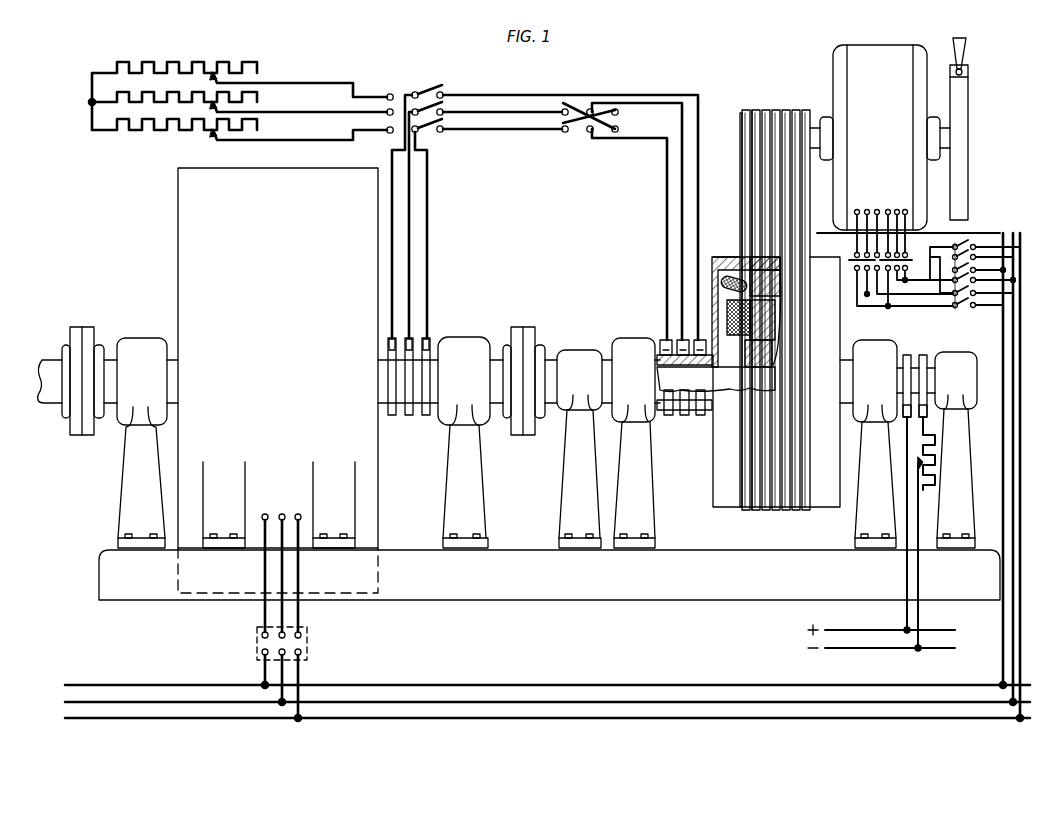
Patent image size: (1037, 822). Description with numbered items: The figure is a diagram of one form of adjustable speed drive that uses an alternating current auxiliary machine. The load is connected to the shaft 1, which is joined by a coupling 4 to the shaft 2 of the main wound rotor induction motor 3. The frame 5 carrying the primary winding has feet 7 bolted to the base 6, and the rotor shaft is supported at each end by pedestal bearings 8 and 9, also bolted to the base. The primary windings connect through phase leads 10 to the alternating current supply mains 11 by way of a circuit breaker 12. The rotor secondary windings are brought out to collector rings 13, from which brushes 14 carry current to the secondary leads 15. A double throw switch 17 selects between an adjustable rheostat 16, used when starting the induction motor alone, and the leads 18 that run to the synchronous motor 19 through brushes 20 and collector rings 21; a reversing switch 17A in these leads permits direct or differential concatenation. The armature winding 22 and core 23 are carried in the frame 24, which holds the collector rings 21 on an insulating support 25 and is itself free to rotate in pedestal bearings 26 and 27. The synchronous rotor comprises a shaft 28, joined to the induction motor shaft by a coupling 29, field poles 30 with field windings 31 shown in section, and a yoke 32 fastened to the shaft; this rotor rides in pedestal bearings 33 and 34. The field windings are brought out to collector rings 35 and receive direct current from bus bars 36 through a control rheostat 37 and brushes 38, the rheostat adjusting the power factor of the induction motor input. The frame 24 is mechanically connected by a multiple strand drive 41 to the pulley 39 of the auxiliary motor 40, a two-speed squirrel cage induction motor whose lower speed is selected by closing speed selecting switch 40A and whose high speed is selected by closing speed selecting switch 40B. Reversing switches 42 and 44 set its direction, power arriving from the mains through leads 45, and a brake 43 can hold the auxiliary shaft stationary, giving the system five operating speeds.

The shaft 1 is at (53, 368).
The shaft 2 is at (108, 368).
The main wound rotor induction motor 3 is at (130, 218).
The coupling 4 is at (76, 338).
The frame 5 is at (178, 264).
The base 6 is at (108, 566).
The feet 7 is at (340, 536).
The pedestal bearing 8 is at (124, 412).
The pedestal bearing 9 is at (472, 405).
The phase leads 10 is at (301, 613).
The alternating current supply mains 11 is at (712, 716).
The circuit breaker 12 is at (310, 642).
The collector rings 13 is at (426, 417).
The brushes 14 is at (428, 341).
The secondary leads 15 is at (404, 218).
The adjustable rheostat 16 is at (80, 112).
The double throw switch 17 is at (428, 132).
The reversing switch 17A is at (568, 133).
The leads 18 is at (698, 162).
The synchronous motor 19 is at (712, 266).
The brushes 20 is at (683, 345).
The collector rings 21 is at (698, 348).
The armature winding 22 is at (722, 283).
The core 23 is at (782, 285).
The frame 24 is at (782, 262).
The insulating support 25 is at (660, 357).
The pedestal bearing 26 is at (645, 408).
The pedestal bearing 27 is at (875, 350).
The shaft 28 is at (553, 390).
The coupling 29 is at (520, 337).
The field poles 30 is at (778, 312).
The field windings 31 is at (728, 310).
The yoke 32 is at (774, 352).
The pedestal bearing 33 is at (585, 405).
The pedestal bearing 34 is at (962, 350).
The collector rings 35 is at (922, 355).
The bus bars 36 is at (866, 650).
The control rheostat 37 is at (936, 445).
The brushes 38 is at (928, 412).
The pulley 39 is at (742, 135).
The auxiliary motor 40 is at (855, 80).
The speed selecting switch 40A is at (860, 255).
The speed selecting switch 40B is at (912, 212).
The multiple strand drive 41 is at (757, 180).
The reversing switch 42 is at (958, 308).
The brake 43 is at (962, 102).
The reversing switch 44 is at (975, 243).
The leads 45 is at (1020, 482).